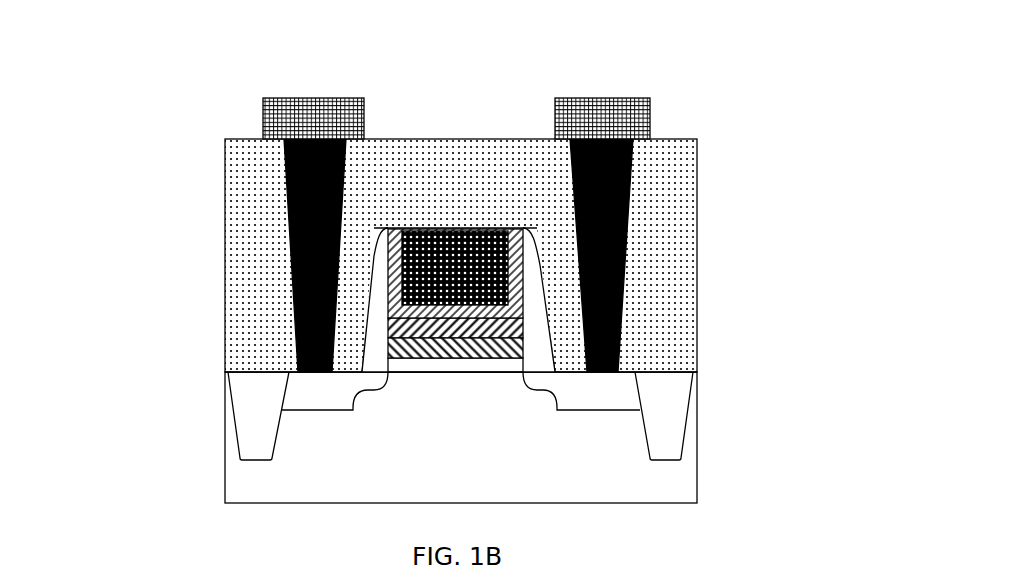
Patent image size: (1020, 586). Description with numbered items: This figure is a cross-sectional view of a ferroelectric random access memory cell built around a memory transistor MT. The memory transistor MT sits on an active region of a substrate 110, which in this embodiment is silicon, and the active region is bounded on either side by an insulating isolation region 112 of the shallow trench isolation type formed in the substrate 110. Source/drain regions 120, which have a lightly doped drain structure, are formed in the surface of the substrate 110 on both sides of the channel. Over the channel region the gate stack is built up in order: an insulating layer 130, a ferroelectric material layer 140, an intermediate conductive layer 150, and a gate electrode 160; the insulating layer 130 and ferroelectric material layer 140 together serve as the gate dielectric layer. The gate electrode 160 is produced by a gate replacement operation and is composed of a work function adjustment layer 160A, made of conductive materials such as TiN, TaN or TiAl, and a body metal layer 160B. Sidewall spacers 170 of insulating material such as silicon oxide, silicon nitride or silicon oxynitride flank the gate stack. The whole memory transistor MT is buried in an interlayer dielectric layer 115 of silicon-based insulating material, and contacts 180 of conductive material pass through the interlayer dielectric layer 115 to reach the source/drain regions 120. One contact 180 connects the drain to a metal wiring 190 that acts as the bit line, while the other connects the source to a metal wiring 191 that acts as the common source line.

The substrate 110 is at (293, 480).
The insulating isolation region 112 is at (255, 440).
The interlayer dielectric layer 115 is at (453, 170).
The source/drain regions 120 is at (335, 389).
The insulating layer 130 is at (510, 362).
The ferroelectric material layer 140 is at (523, 329).
The intermediate conductive layer 150 is at (388, 325).
The gate electrode 160 is at (625, 189).
The work function adjustment layer 160A is at (497, 270).
The body metal layer 160B is at (527, 230).
The sidewall spacers 170 is at (372, 310).
The contacts 180 is at (287, 187).
The metal wiring 190 is at (317, 110).
The metal wiring 191 is at (625, 115).
The memory transistor MT is at (505, 173).